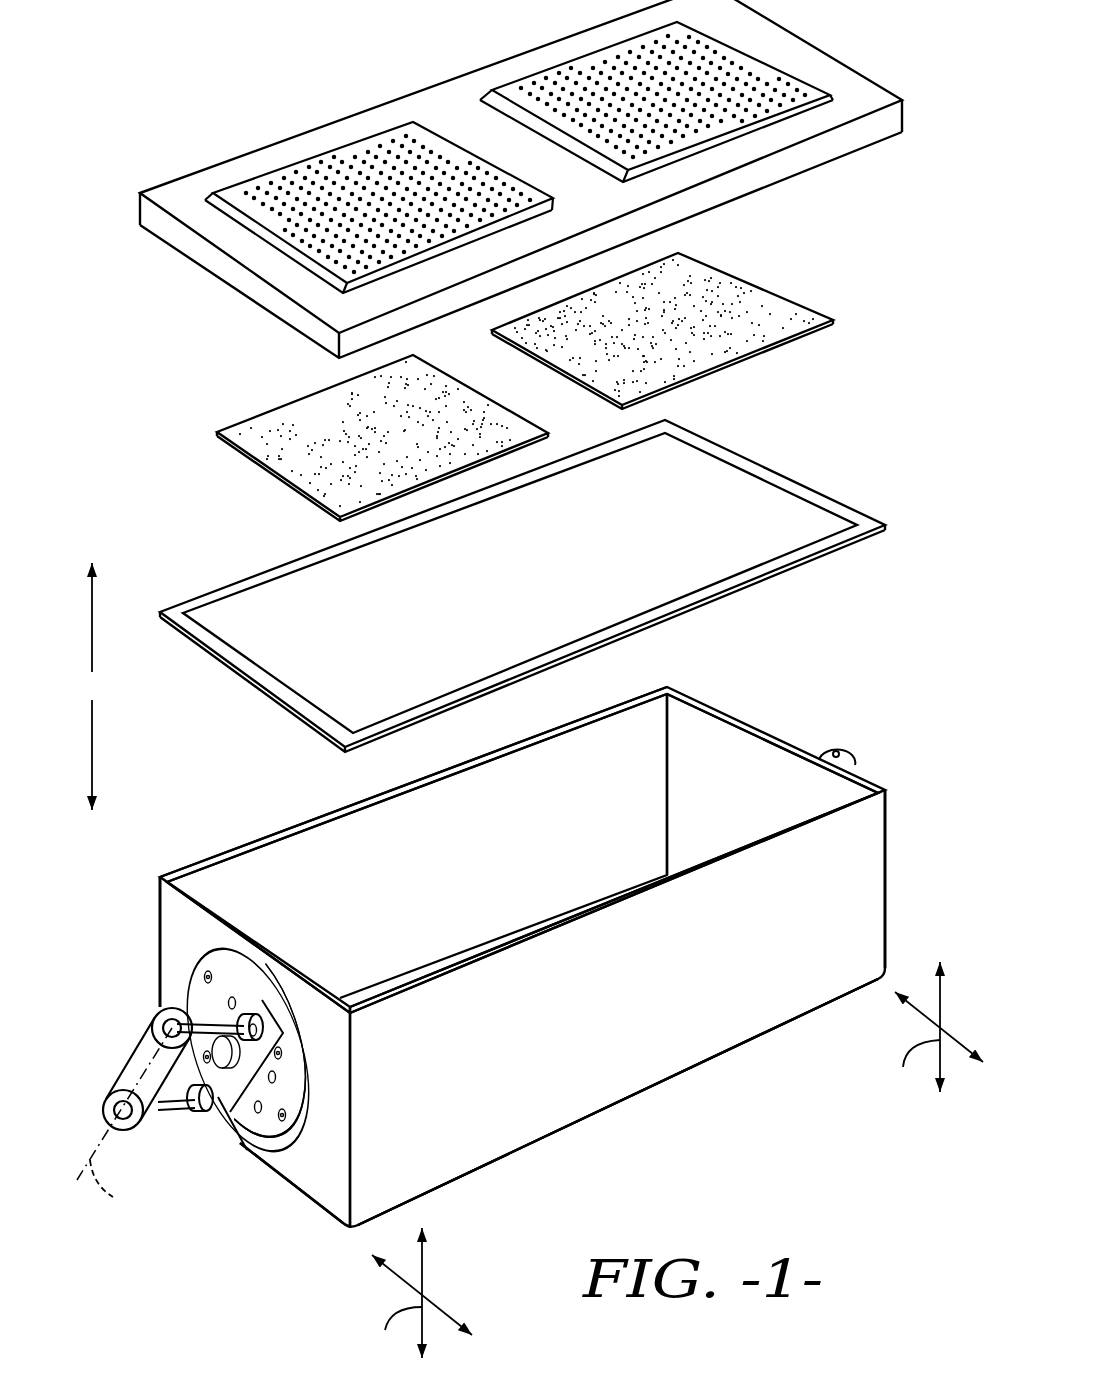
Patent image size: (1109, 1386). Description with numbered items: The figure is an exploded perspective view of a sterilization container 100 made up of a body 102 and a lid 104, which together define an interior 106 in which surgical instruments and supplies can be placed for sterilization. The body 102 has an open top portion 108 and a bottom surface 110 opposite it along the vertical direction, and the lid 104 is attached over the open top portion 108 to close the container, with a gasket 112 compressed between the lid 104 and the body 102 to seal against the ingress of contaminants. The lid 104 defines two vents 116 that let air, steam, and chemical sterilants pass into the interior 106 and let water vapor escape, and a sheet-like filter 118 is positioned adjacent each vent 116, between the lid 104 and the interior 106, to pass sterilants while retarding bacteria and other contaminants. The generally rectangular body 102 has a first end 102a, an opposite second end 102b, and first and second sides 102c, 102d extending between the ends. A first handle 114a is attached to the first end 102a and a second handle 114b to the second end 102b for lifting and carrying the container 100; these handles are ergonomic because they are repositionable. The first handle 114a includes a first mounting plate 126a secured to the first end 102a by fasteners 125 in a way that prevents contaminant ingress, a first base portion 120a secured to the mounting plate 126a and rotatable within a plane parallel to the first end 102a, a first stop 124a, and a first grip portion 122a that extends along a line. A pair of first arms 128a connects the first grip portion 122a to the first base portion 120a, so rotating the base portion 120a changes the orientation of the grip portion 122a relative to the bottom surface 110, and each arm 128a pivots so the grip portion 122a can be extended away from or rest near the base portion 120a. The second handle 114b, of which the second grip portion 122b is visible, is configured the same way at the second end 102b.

The sterilization container 100 is at (212, 803).
The body 102 is at (670, 1043).
The first end 102a is at (330, 1188).
The second end 102b is at (888, 907).
The first side 102c is at (300, 820).
The second side 102d is at (530, 1120).
The lid 104 is at (852, 97).
The interior 106 is at (613, 748).
The open top portion 108 is at (192, 910).
The bottom surface 110 is at (502, 1158).
The gasket 112 is at (828, 503).
The first handle 114a is at (187, 1190).
The second handle 114b is at (867, 750).
The vent 116 is at (332, 177).
The filter 118 is at (277, 430).
The first base portion 120a is at (257, 1152).
The first grip portion 122a is at (137, 1068).
The second grip portion 122b is at (835, 755).
The first stop 124a is at (300, 1090).
The fastener 125 is at (290, 1117).
The first mounting plate 126a is at (250, 1155).
The first arm 128a is at (192, 1007).